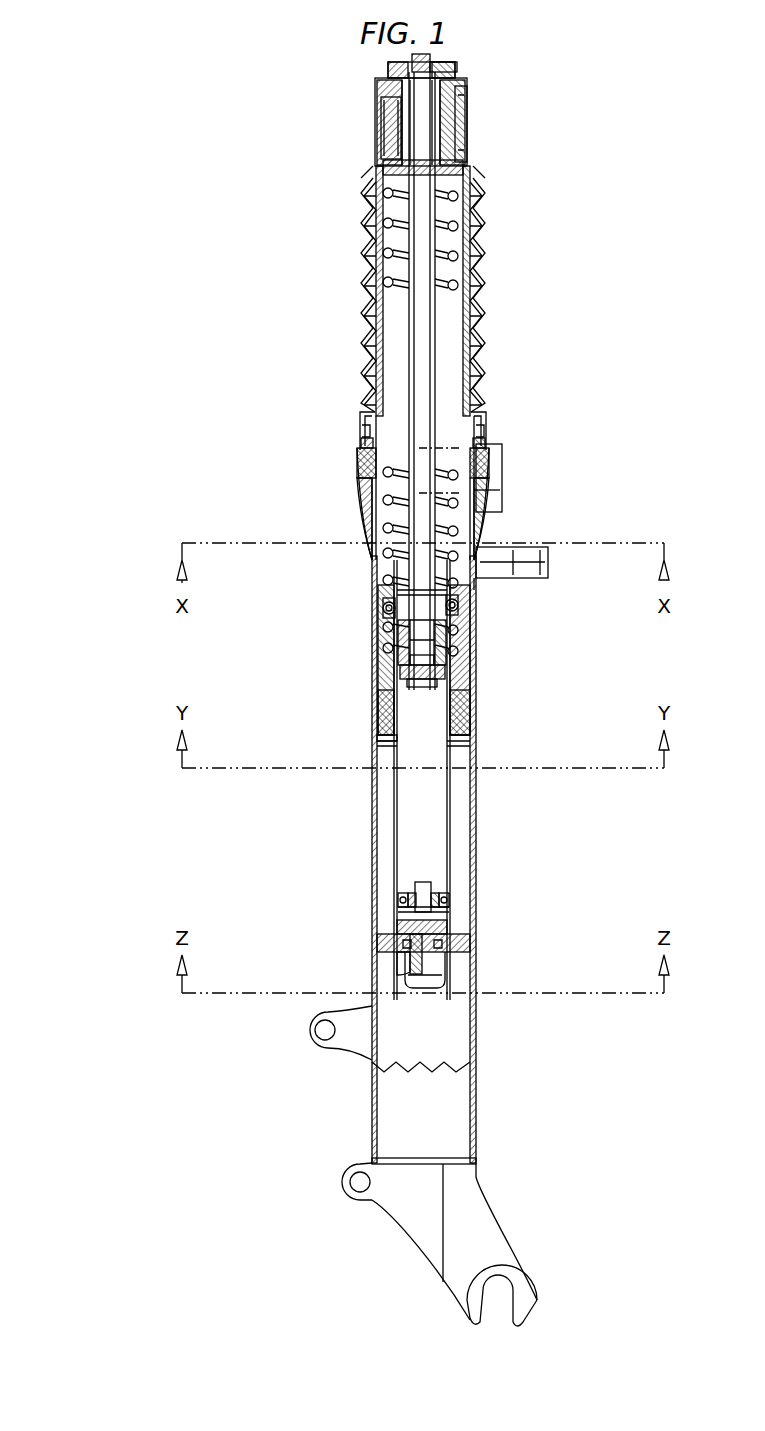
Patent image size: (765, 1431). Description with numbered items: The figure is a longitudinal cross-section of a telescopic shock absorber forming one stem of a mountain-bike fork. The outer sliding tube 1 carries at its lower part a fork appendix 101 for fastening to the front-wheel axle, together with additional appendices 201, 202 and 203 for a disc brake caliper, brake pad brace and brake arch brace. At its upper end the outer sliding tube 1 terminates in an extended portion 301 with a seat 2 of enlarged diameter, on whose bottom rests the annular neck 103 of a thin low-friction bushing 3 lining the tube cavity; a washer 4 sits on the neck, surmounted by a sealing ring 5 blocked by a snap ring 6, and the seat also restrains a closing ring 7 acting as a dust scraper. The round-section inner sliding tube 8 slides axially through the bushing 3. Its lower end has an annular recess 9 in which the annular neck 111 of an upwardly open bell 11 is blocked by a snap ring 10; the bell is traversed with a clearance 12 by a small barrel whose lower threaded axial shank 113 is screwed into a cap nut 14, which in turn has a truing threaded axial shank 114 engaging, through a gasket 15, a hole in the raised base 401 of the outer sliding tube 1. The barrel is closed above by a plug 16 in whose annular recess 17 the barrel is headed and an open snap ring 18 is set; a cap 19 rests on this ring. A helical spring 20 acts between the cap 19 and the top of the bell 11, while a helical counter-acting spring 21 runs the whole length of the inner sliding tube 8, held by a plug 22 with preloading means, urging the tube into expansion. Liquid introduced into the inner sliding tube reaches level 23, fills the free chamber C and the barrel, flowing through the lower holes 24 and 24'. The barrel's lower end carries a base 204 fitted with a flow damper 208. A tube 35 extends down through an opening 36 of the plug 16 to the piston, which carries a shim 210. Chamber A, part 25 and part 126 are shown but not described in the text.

The outer sliding tube 1 is at (482, 815).
The seat 2 is at (474, 472).
The thin bushing 3 is at (366, 498).
The washer 4 is at (474, 482).
The sealing ring 5 is at (472, 462).
The snap ring 6 is at (478, 440).
The closing ring 7 is at (480, 420).
The inner sliding tube 8 is at (476, 303).
The annular recess 9 is at (376, 746).
The snap ring 10 is at (468, 745).
The bell 11 is at (470, 716).
The clearance 12 is at (456, 672).
The cap nut 14 is at (442, 988).
The gasket 15 is at (452, 926).
The plug 16 is at (380, 600).
The annular recess 17 is at (458, 608).
The open snap ring 18 is at (381, 615).
The cap 19 is at (482, 586).
The helical spring 20 is at (380, 660).
The helical counter-acting spring 21 is at (373, 535).
The plug 22 is at (455, 72).
The level 23 is at (377, 577).
The lower hole 24 is at (481, 891).
The lower hole 24' is at (373, 898).
The adjuster 25 is at (466, 104).
The tube 35 is at (436, 368).
The opening 36 is at (544, 536).
The fork appendix 101 is at (510, 1252).
The annular neck 103 is at (476, 496).
The annular neck 111 is at (379, 733).
The threaded axial shank 113 is at (458, 966).
The truing threaded axial shank 114 is at (377, 940).
The spring seat 126 is at (392, 118).
The appendix 201 is at (312, 1040).
The appendix 202 is at (548, 572).
The appendix 203 is at (502, 506).
The base 204 is at (432, 890).
The flow damper 208 is at (452, 896).
The shim 210 is at (462, 660).
The extended portion 301 is at (362, 438).
The raised base 401 is at (378, 972).
The chamber A is at (406, 812).
The free chamber C is at (440, 805).